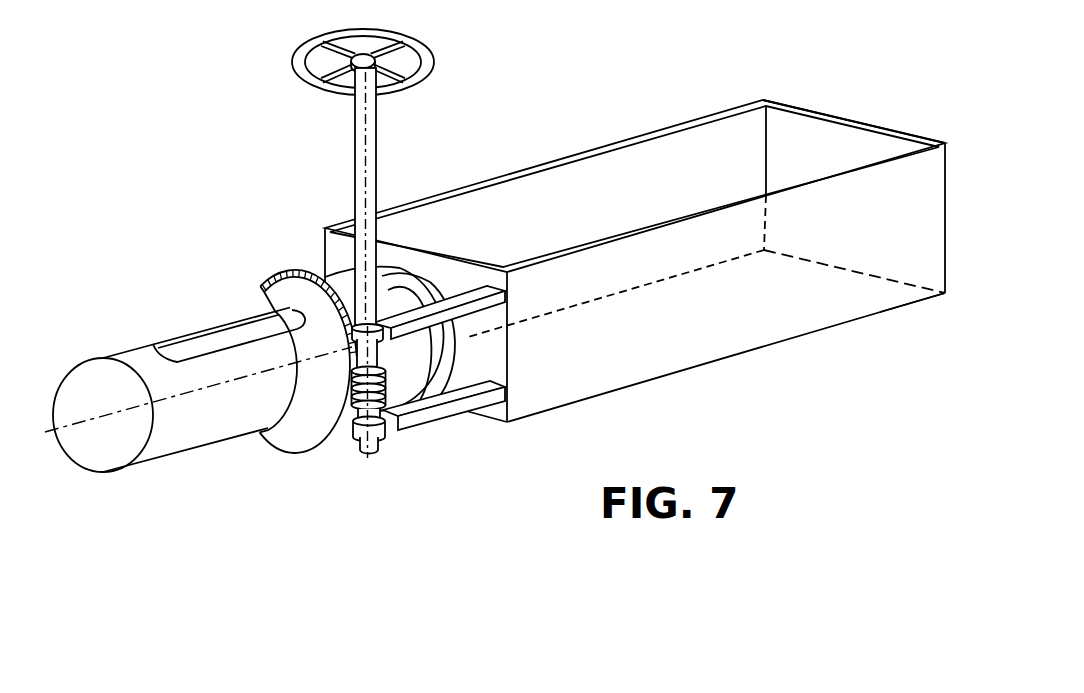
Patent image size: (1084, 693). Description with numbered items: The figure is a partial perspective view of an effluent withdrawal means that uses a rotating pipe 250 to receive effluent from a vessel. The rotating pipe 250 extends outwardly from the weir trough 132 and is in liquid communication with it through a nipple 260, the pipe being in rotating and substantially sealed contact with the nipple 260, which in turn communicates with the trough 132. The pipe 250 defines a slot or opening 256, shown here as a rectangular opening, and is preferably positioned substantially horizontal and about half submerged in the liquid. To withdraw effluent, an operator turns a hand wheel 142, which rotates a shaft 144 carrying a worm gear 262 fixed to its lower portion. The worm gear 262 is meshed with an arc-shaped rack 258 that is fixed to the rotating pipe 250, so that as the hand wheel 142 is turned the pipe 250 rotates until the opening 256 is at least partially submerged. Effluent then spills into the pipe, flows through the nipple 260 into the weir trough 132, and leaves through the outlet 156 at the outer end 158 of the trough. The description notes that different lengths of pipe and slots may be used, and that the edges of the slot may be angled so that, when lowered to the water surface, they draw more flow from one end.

The weir trough 132 is at (600, 151).
The hand wheel 142 is at (298, 62).
The shaft 144 is at (357, 156).
The outlet 156 is at (930, 273).
The outer end of the weir trough 158 is at (845, 122).
The rotating pipe 250 is at (192, 437).
The slot or opening 256 is at (203, 345).
The arc-shaped rack 258 is at (300, 277).
The nipple 260 is at (416, 277).
The worm gear 262 is at (352, 428).